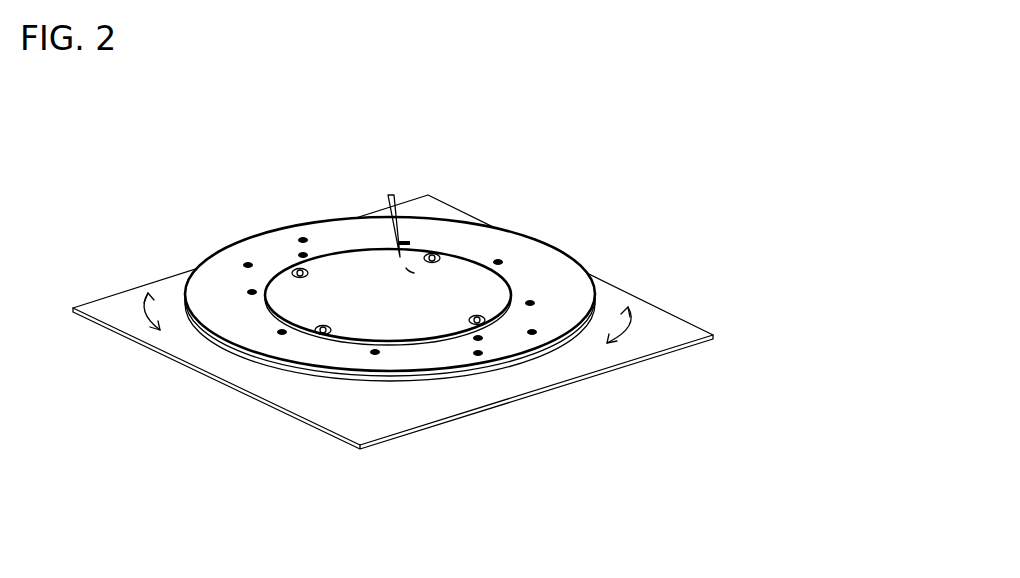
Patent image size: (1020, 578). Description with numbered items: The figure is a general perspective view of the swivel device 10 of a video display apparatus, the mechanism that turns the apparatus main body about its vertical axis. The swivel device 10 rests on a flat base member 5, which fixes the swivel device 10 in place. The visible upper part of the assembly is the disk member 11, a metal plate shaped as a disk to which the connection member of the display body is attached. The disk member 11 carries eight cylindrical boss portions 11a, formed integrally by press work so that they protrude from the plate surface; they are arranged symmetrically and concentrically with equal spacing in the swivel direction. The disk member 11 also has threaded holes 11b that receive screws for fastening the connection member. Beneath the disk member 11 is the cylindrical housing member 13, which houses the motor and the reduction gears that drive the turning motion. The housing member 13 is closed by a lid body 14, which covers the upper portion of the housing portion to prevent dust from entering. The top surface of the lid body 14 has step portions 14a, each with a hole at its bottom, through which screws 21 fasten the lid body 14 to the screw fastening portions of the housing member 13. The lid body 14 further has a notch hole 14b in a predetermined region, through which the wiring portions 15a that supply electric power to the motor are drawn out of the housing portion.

The base member 5 is at (683, 337).
The swivel device 10 is at (658, 122).
The disk member 11 is at (565, 268).
The boss portion 11a is at (305, 253).
The threaded hole 11b is at (303, 238).
The housing member 13 is at (430, 385).
The lid body 14 is at (530, 242).
The step portion 14a is at (298, 271).
The notch hole 14b is at (412, 270).
The wiring portion 15a is at (391, 195).
The screw 21 is at (306, 277).